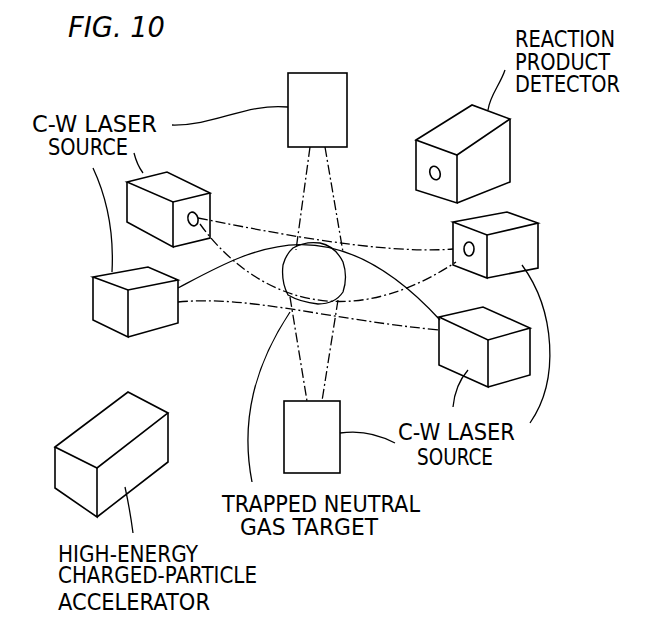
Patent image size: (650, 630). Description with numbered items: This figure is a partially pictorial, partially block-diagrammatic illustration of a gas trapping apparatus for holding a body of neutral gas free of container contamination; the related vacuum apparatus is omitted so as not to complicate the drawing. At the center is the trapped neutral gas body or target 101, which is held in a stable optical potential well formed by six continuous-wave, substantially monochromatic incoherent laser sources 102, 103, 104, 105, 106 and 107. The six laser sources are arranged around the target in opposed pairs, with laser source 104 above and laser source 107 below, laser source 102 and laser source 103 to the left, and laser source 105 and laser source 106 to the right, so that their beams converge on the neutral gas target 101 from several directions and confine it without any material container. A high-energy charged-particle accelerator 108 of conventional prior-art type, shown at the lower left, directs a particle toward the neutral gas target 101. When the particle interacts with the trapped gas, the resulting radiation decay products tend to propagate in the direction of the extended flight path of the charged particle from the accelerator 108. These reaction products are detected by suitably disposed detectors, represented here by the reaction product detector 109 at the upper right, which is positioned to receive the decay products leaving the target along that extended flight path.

The trapped neutral gas target 101 is at (298, 283).
The continuous-wave laser source 102 is at (107, 322).
The continuous-wave laser source 103 is at (183, 180).
The continuous-wave laser source 104 is at (347, 92).
The continuous-wave laser source 105 is at (532, 243).
The continuous-wave laser source 106 is at (442, 350).
The continuous-wave laser source 107 is at (340, 460).
The accelerator 108 is at (72, 433).
The reaction product detector 109 is at (505, 150).